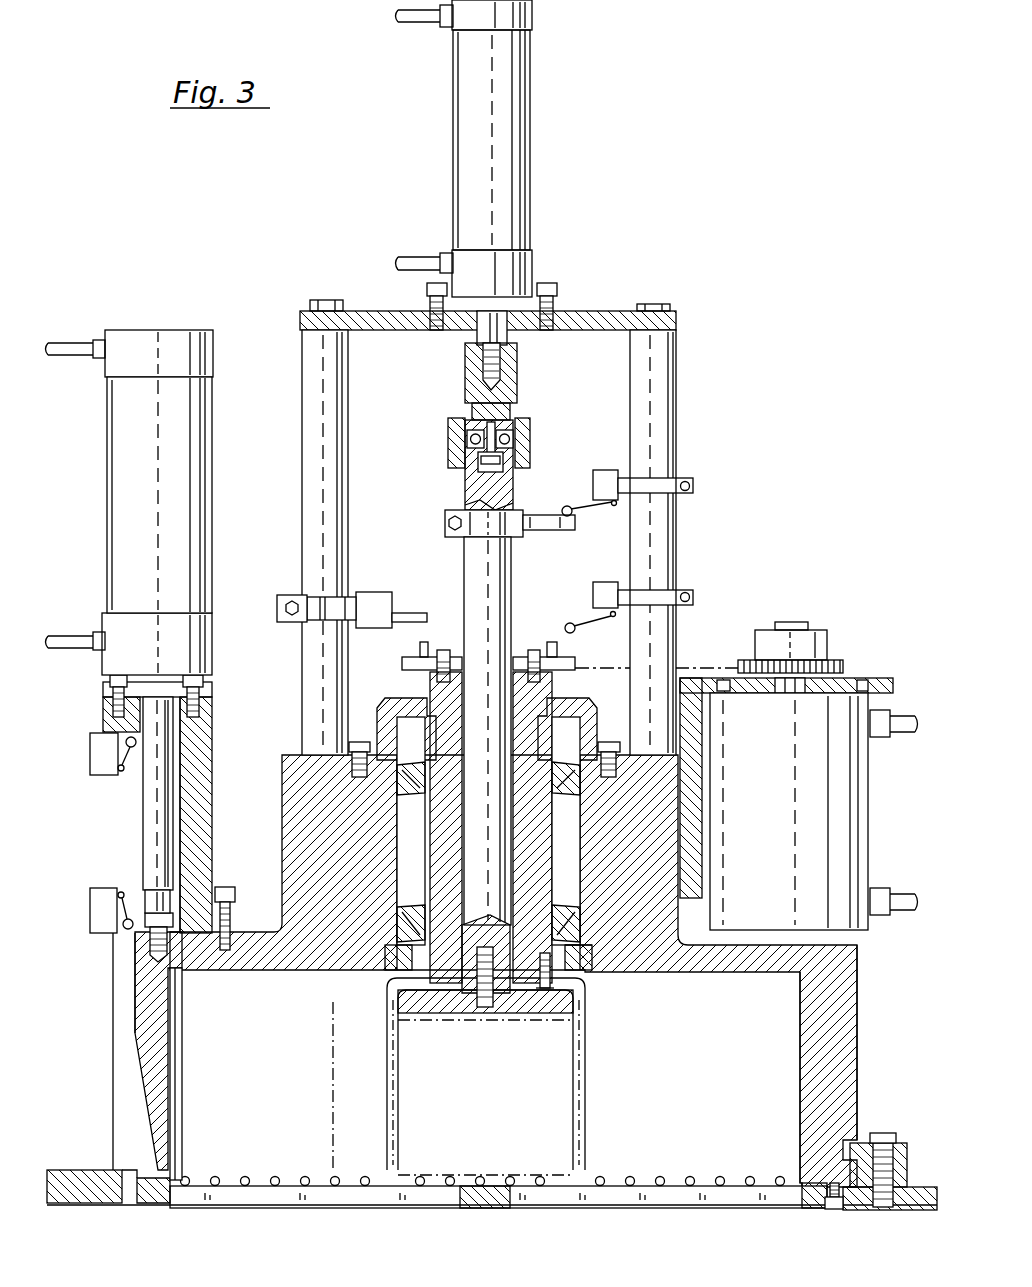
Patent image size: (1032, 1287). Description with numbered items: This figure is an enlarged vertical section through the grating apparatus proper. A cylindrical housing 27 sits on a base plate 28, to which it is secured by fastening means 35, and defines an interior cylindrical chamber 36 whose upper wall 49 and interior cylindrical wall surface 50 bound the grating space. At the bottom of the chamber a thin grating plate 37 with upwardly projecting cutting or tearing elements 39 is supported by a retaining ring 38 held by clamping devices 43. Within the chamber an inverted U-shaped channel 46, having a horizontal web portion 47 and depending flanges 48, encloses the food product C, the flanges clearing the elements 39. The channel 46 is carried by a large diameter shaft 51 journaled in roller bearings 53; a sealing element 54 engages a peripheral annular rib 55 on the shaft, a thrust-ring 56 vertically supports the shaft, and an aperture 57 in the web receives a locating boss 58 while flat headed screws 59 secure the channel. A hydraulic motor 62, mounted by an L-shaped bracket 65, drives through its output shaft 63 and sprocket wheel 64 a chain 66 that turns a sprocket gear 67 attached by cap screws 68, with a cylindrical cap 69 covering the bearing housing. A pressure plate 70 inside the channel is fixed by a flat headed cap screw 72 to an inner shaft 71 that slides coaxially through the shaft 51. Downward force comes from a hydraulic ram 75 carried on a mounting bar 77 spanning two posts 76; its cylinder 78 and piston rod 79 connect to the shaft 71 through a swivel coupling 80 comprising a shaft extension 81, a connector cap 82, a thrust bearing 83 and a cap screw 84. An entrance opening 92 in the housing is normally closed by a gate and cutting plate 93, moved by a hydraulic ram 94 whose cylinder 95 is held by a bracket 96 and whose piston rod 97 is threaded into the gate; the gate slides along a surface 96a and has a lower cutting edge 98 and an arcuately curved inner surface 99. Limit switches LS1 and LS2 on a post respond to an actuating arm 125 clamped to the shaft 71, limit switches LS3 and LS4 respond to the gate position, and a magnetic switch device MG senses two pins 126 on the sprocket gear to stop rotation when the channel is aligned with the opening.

The housing 27 is at (860, 985).
The base plate 28 is at (97, 1203).
The fastening means 35 is at (905, 1148).
The cylindrical chamber 36 is at (722, 1182).
The grating plate 37 is at (612, 1200).
The retaining ring 38 is at (303, 1208).
The cutting or tearing elements 39 is at (645, 1180).
The clamping devices 43 is at (830, 1212).
The U-shaped channel 46 is at (387, 1110).
The web portion 47 is at (396, 1030).
The flanges 48 is at (612, 1080).
The upper wall 49 is at (700, 975).
The interior cylindrical wall surface 50 is at (800, 1095).
The shaft 51 is at (443, 690).
The roller bearings 53 is at (572, 790).
The sealing element 54 is at (578, 962).
The peripheral annular rib 55 is at (420, 978).
The thrust-ring 56 is at (594, 708).
The aperture 57 is at (478, 1008).
The boss 58 is at (543, 990).
The flat headed screws 59 is at (548, 988).
The hydraulic motor 62 is at (862, 796).
The output shaft 63 is at (790, 692).
The sprocket wheel 64 is at (833, 662).
The L-shaped bracket 65 is at (888, 678).
The chain 66 is at (695, 668).
The sprocket gear 67 is at (540, 655).
The cap screws 68 is at (443, 656).
The cylindrical cap 69 is at (570, 700).
The pressure plate 70 is at (430, 1005).
The shaft 71 is at (470, 572).
The flat headed cap screw 72 is at (490, 1012).
The hydraulic ram 75 is at (453, 89).
The posts 76 is at (302, 405).
The mounting bar 77 is at (603, 310).
The cylinder 78 is at (530, 73).
The piston rod 79 is at (477, 338).
The swivel coupling 80 is at (465, 388).
The shaft extension 81 is at (497, 381).
The connector cap 82 is at (448, 436).
The thrust bearing 83 is at (518, 430).
The cap screw 84 is at (472, 470).
The entrance opening 92 is at (130, 1095).
The gate and cutting plate 93 is at (145, 1050).
The hydraulic ram 94 is at (107, 485).
The cylinder 95 is at (118, 405).
The bracket 96 is at (200, 736).
The surface 96a is at (182, 801).
The piston rod 97 is at (152, 832).
The lower cutting edge 98 is at (160, 1167).
The arcuately curved inner surface 99 is at (174, 1088).
The actuating arm 125 is at (568, 531).
The magnetic field affecting pins 126 is at (420, 648).
The limit switch LS1 is at (600, 592).
The limit switch LS2 is at (605, 470).
The limit switch LS3 is at (104, 766).
The limit switch LS4 is at (103, 895).
The magnetic field responsive switch device MG is at (380, 592).
The food product C is at (580, 1086).